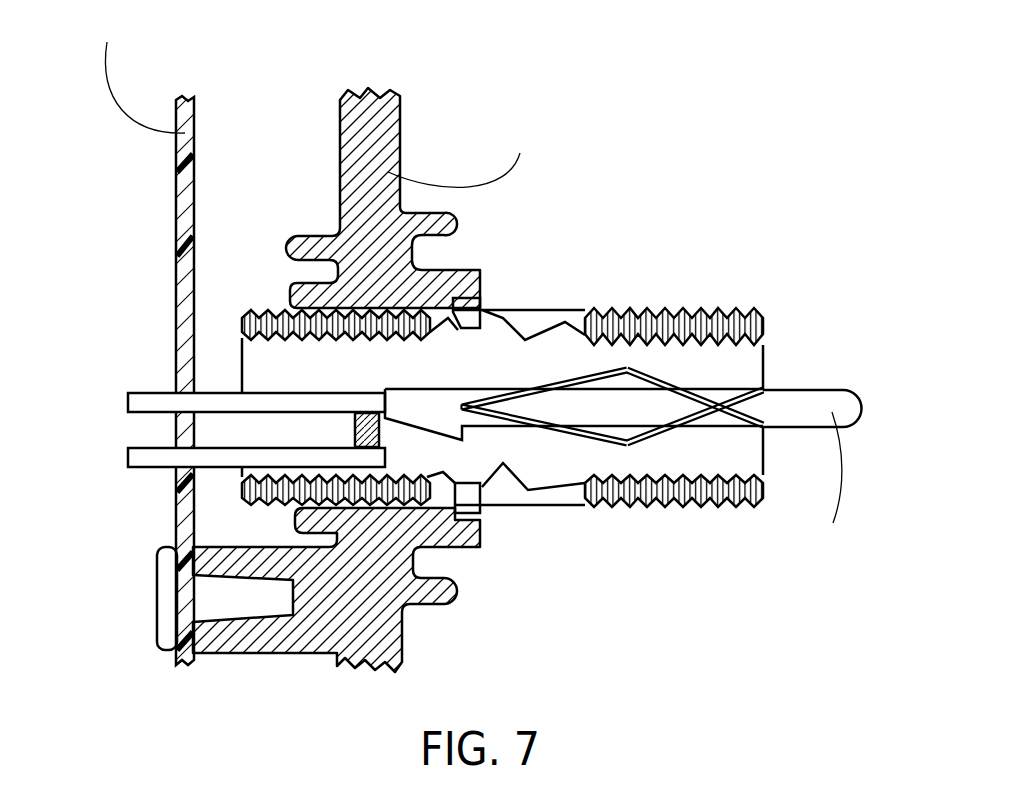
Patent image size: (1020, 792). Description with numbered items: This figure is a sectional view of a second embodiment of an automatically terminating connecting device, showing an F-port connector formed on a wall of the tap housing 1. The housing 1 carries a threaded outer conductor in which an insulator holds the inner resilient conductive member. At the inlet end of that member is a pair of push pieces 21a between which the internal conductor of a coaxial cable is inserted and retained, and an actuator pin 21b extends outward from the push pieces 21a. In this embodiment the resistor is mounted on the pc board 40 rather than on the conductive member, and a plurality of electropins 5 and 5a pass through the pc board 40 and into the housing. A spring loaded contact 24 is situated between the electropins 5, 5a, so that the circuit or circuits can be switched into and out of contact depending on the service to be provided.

The tap housing 1 is at (365, 92).
The pc board 40 is at (183, 188).
The electropin 5 is at (148, 400).
The electropin 5a is at (150, 458).
The spring loaded contact 24 is at (377, 430).
The push pieces 21a is at (713, 403).
The actuator pin 21b is at (805, 400).